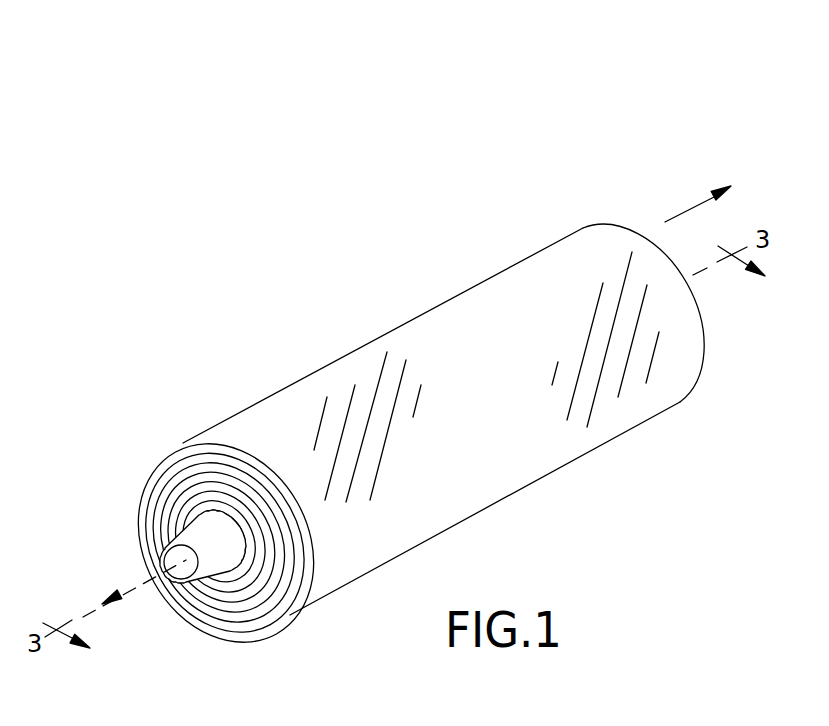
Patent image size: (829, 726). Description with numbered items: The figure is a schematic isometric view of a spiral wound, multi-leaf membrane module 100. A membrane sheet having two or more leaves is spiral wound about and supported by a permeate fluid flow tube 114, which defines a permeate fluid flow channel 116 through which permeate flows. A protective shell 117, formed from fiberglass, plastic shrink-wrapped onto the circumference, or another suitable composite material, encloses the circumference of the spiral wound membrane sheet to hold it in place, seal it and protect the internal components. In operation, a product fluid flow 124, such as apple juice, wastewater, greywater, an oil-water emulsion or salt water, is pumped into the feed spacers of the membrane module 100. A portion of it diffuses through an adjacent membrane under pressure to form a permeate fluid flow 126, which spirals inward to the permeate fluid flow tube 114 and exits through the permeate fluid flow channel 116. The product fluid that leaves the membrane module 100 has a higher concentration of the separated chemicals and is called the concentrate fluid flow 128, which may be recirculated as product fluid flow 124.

The membrane module 100 is at (594, 104).
The permeate fluid flow tube 114 is at (211, 568).
The permeate fluid flow channel 116 is at (178, 582).
The protective shell 117 is at (655, 403).
The product fluid flow 124 is at (150, 480).
The permeate fluid flow 126 is at (120, 593).
The concentrate fluid flow 128 is at (714, 196).